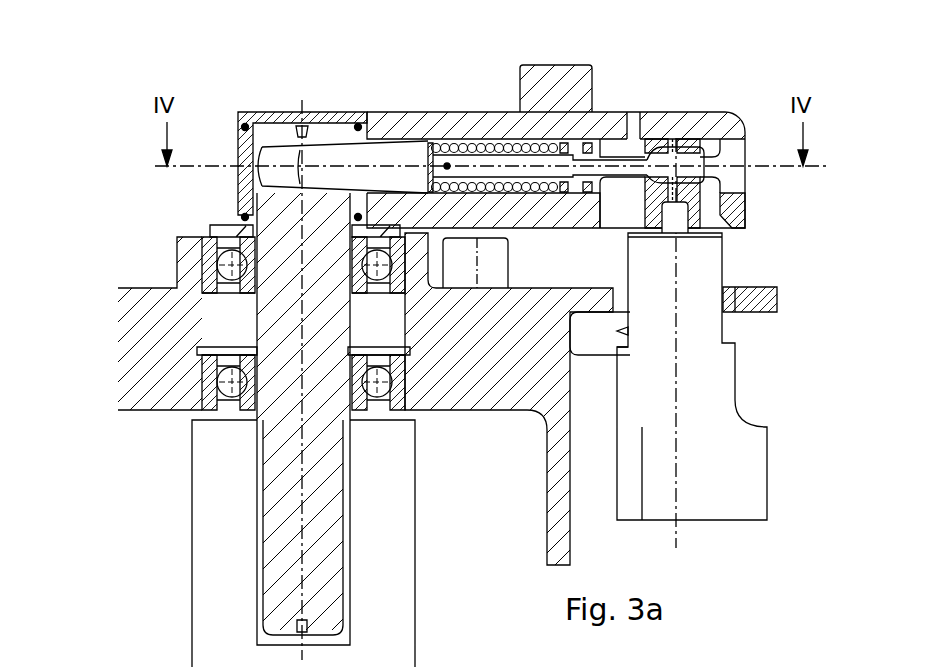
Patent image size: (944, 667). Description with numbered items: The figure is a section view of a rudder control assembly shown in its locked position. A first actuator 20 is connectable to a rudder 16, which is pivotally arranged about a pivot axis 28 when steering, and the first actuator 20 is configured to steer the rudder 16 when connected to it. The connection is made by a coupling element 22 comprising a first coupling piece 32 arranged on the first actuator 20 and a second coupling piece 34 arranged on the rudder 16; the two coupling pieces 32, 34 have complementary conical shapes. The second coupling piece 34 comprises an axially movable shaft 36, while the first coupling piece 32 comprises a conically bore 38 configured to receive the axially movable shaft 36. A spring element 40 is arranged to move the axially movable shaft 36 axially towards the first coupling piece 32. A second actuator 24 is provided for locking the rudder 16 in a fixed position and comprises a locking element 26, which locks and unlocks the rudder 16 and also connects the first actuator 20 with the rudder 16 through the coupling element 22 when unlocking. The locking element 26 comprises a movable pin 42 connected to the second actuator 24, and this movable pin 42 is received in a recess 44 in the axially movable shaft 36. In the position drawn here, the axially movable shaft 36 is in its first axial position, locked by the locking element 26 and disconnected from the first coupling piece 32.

The rudder 16 is at (528, 65).
The first actuator 20 is at (192, 515).
The coupling element 22 is at (223, 116).
The second actuator 24 is at (738, 357).
The locking element 26 is at (745, 233).
The pivot axis 28 is at (300, 327).
The first coupling piece 32 is at (283, 189).
The second coupling piece 34 is at (423, 133).
The axially movable shaft 36 is at (387, 157).
The conically bore 38 is at (285, 147).
The spring element 40 is at (515, 147).
The movable pin 42 is at (720, 210).
The recess 44 is at (690, 212).